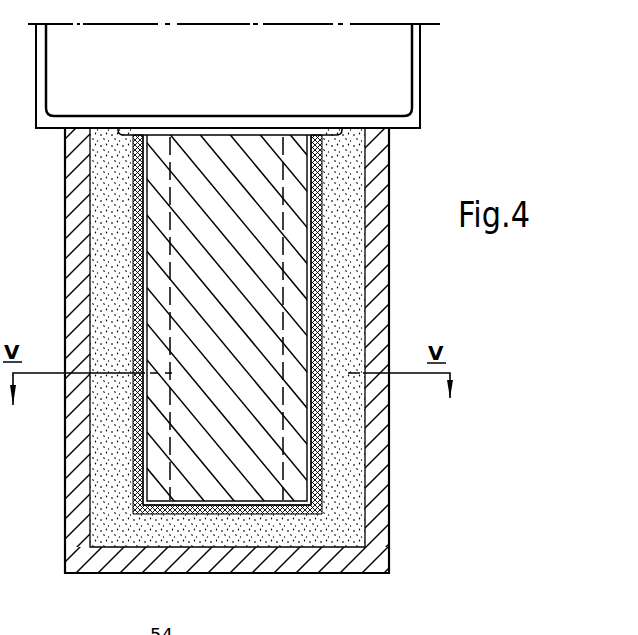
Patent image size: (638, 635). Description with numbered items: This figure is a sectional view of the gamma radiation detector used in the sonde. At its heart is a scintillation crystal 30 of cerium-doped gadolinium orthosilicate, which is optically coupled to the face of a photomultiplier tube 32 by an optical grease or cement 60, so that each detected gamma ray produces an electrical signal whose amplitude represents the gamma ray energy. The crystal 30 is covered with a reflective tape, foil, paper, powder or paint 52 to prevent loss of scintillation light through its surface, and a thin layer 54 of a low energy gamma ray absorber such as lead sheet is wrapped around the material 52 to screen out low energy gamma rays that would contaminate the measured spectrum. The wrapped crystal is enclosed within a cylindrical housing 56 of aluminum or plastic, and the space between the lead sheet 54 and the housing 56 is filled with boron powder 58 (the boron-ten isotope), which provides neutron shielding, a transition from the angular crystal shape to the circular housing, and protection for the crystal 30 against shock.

The scintillation crystal 30 is at (295, 231).
The photomultiplier tube 32 is at (415, 80).
The reflective tape, foil, paper, powder or paint 52 is at (315, 455).
The thin layer of low energy gamma ray absorber 54 is at (318, 492).
The cylindrical housing 56 is at (372, 552).
The boron-10 powder 58 is at (110, 528).
The optical grease or cement 60 is at (319, 131).